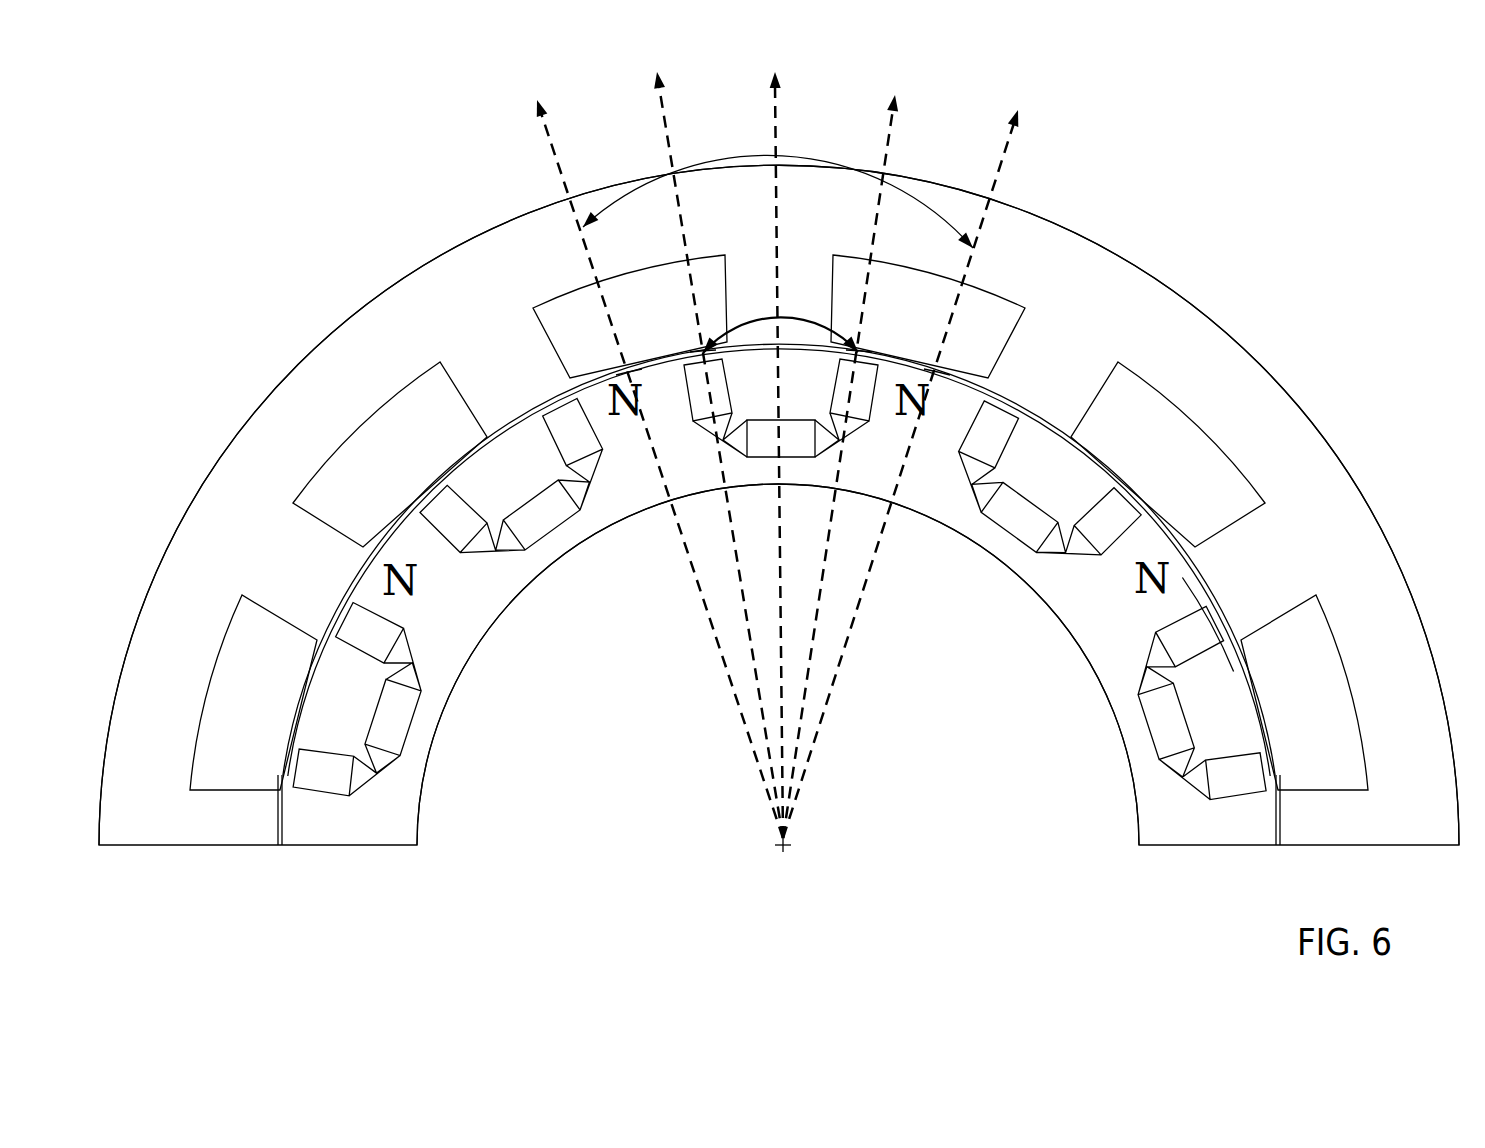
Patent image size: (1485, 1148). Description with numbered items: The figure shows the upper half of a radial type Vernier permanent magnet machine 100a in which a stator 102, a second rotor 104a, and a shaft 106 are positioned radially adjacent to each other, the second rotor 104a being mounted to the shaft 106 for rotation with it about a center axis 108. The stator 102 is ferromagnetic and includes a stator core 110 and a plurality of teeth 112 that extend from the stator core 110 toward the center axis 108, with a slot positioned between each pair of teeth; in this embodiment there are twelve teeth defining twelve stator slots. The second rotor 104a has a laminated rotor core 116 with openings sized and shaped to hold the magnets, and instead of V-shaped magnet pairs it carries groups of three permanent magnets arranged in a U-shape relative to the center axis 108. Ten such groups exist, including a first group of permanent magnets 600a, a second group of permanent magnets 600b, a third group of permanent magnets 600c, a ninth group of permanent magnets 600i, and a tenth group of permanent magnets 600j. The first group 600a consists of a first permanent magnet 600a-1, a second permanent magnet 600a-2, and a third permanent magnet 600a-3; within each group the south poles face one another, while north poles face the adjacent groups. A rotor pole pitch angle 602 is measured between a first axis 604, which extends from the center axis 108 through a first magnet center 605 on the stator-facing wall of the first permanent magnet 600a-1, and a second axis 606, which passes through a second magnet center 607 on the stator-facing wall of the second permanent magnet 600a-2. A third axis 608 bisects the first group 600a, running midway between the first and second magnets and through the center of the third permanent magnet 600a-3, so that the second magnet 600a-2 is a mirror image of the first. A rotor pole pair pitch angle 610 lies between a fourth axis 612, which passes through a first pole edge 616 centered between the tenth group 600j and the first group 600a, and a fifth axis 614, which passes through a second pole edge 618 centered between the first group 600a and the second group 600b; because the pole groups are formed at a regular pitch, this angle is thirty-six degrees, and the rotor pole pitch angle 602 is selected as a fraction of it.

The electric machine 100a is at (426, 230).
The stator 102 is at (1250, 340).
The second rotor 104a is at (1272, 700).
The shaft 106 is at (779, 505).
The center axis 108 is at (786, 847).
The stator core 110 is at (1304, 647).
The plurality of teeth 112 is at (458, 522).
The rotor core 116 is at (1048, 436).
The first group of permanent magnets 600a is at (817, 430).
The first permanent magnet 600a-1 is at (698, 392).
The second permanent magnet 600a-2 is at (863, 379).
The third permanent magnet 600a-3 is at (805, 452).
The second group of permanent magnets 600b is at (995, 548).
The third group of permanent magnets 600c is at (1133, 748).
The ninth group of permanent magnets 600i is at (428, 729).
The tenth group of permanent magnets 600j is at (562, 548).
The rotor pole pitch angle 602 is at (790, 318).
The first axis 604 is at (662, 103).
The first magnet center 605 is at (700, 352).
The second axis 606 is at (890, 137).
The second magnet center 607 is at (862, 351).
The third axis 608 is at (778, 92).
The rotor pole pair pitch angle 610 is at (627, 195).
The fourth axis 612 is at (548, 147).
The fifth axis 614 is at (1005, 160).
The first pole edge 616 is at (629, 372).
The second pole edge 618 is at (937, 372).